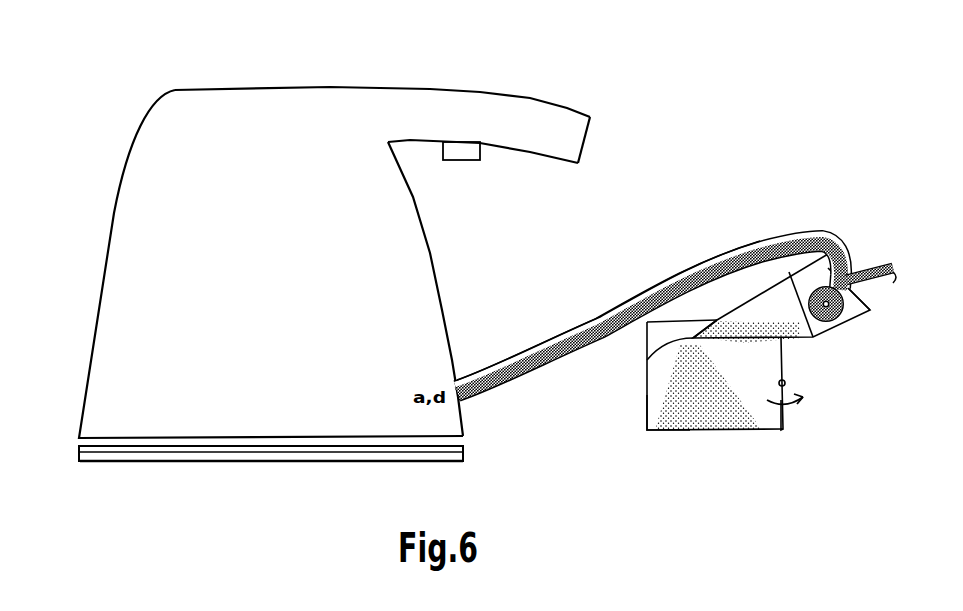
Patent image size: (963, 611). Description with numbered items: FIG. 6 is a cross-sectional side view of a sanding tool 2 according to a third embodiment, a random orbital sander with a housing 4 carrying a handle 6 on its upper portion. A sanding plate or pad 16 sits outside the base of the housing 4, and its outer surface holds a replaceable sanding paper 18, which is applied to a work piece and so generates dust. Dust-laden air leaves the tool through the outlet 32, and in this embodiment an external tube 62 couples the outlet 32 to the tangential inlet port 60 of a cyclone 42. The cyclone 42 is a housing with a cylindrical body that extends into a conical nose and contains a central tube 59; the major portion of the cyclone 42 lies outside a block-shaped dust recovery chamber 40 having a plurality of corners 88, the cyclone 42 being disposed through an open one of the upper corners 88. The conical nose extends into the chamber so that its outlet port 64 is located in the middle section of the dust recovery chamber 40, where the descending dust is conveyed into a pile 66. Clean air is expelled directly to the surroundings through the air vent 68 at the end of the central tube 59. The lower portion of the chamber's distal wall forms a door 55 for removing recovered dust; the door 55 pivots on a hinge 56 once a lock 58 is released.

The tool 2 is at (458, 56).
The housing 4 is at (95, 287).
The handle 6 is at (569, 126).
The sanding plate or pad 16 is at (78, 455).
The sanding paper 18 is at (187, 463).
The outlet 32 is at (463, 383).
The dust recovery chamber 40 is at (645, 365).
The cyclone 42 is at (767, 305).
The door 55 is at (780, 426).
The hinge 56 is at (780, 386).
The lock 58 is at (785, 431).
The central tube 59 is at (858, 305).
The tangential inlet port 60 is at (815, 232).
The tube 62 is at (653, 284).
The outlet port 64 is at (659, 363).
The pile 66 is at (652, 433).
The air vent 68 is at (887, 260).
The corners 88 is at (740, 330).